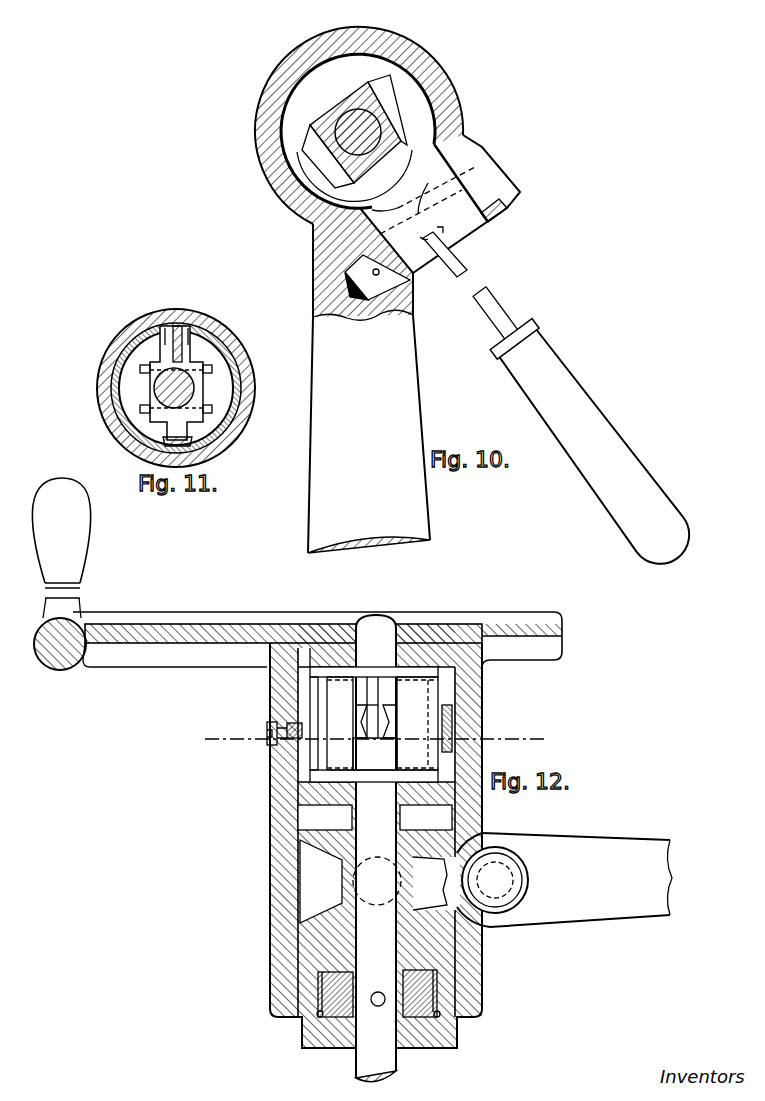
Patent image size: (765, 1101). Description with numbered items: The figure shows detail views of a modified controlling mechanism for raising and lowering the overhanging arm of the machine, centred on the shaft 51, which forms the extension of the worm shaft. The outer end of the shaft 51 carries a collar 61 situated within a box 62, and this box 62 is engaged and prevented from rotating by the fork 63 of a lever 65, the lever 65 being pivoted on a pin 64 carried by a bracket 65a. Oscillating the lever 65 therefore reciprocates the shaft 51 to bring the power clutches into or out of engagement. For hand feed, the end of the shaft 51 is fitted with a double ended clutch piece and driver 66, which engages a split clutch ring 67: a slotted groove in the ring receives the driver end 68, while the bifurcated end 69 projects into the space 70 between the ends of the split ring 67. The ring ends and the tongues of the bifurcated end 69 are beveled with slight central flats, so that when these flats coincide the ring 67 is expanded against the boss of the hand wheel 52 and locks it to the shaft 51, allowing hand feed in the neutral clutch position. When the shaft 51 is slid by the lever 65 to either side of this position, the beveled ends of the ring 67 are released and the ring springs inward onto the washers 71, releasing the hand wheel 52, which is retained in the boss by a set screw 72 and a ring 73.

In FIG. 10, the shaft 51 is at (372, 138).
In FIG. 11, the shaft 51 is at (188, 390).
In FIG. 12, the shaft 51 is at (377, 848).
In FIG. 12, the hand wheel 52 is at (174, 632).
In FIG. 12, the collar 61 is at (420, 995).
In FIG. 10, the box 62 is at (407, 82).
In FIG. 12, the box 62 is at (341, 922).
In FIG. 10, the fork 63 is at (407, 117).
In FIG. 12, the fork 63 is at (436, 883).
In FIG. 10, the pin 64 is at (397, 273).
In FIG. 12, the pin 64 is at (495, 880).
In FIG. 10, the lever 65 is at (487, 304).
In FIG. 12, the lever 65 is at (520, 915).
In FIG. 10, the bracket 65a is at (467, 167).
In FIG. 11, the double ended clutch piece and driver 66 is at (197, 414).
In FIG. 12, the double ended clutch piece and driver 66 is at (408, 742).
In FIG. 11, the split clutch ring 67 is at (125, 356).
In FIG. 12, the split clutch ring 67 is at (452, 703).
In FIG. 11, the driver end 68 is at (197, 446).
In FIG. 11, the bifurcated end 69 is at (178, 340).
In FIG. 12, the bifurcated end 69 is at (392, 727).
In FIG. 11, the space 70 is at (176, 328).
In FIG. 12, the space 70 is at (366, 742).
In FIG. 12, the washers 71 is at (305, 667).
In FIG. 12, the set screw 72 is at (268, 742).
In FIG. 12, the ring 73 is at (292, 750).